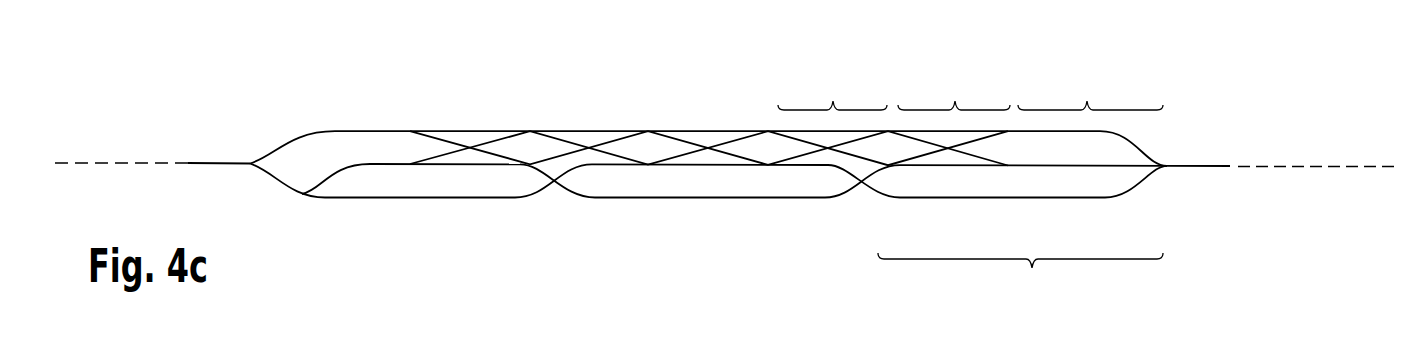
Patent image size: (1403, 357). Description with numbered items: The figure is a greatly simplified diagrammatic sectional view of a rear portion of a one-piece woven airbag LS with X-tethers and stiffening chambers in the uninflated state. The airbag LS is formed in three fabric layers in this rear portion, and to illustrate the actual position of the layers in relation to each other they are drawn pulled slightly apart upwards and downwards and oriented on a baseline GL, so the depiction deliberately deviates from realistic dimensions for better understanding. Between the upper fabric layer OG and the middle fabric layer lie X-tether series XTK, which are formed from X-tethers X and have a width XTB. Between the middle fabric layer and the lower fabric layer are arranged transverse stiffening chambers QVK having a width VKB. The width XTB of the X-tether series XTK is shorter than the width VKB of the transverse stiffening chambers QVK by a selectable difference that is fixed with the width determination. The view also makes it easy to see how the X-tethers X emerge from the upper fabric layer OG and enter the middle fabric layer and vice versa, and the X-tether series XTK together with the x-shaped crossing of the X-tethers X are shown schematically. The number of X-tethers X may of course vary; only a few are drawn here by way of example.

The airbag LS is at (212, 100).
The X-tethers X is at (441, 153).
The width of the X-tether series XTB is at (832, 89).
The X-tether series XTK is at (954, 88).
The upper fabric layer OG is at (1140, 147).
The baseline GL is at (1332, 165).
The transverse stiffening chambers QVK is at (372, 187).
The lower fabric layer UG is at (737, 202).
The width of the transverse stiffening chambers VKB is at (1020, 281).